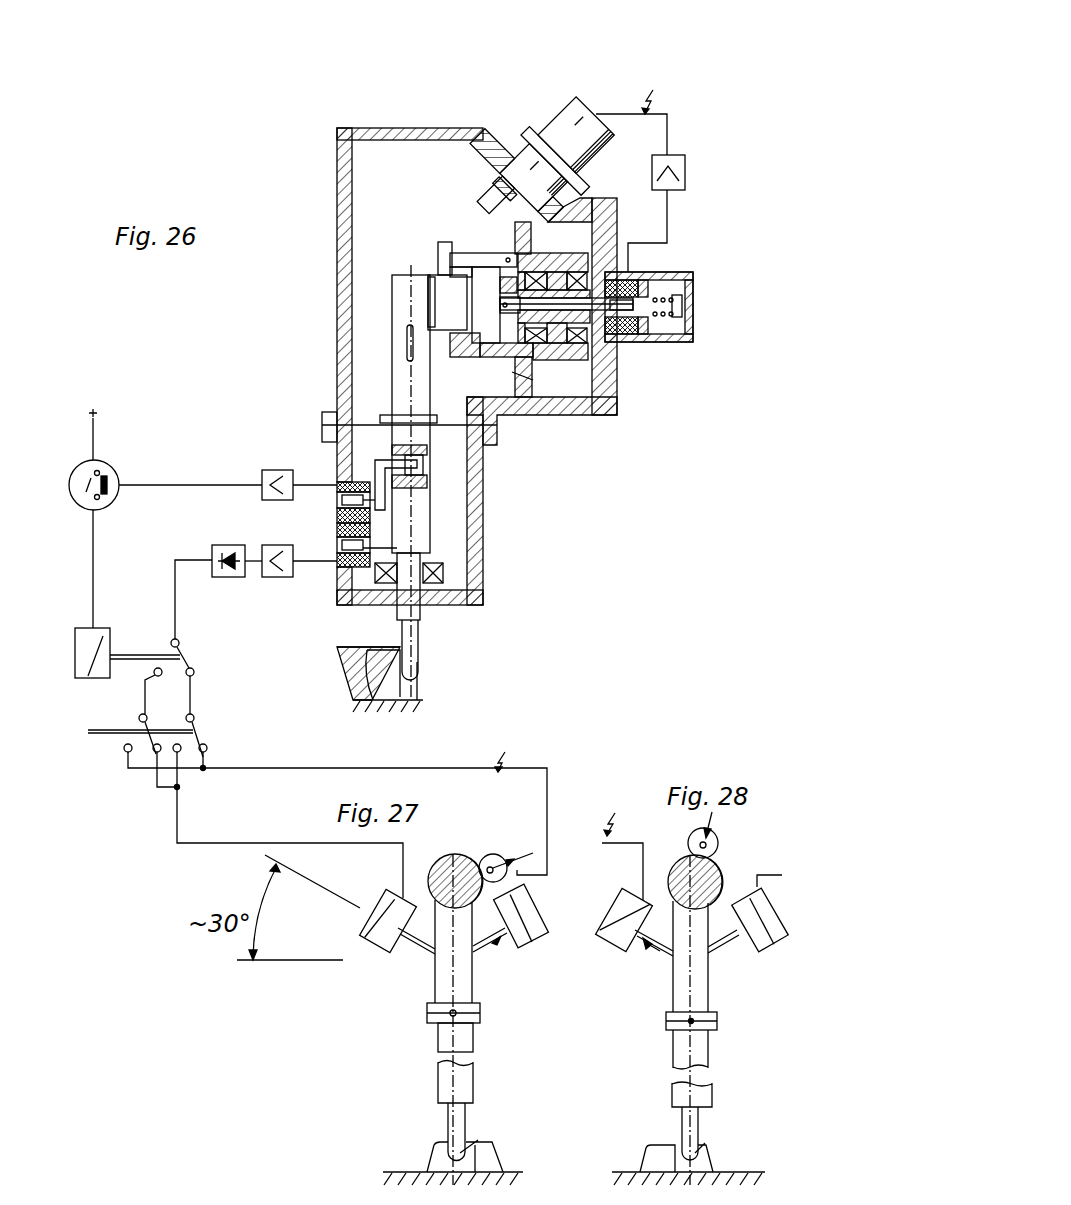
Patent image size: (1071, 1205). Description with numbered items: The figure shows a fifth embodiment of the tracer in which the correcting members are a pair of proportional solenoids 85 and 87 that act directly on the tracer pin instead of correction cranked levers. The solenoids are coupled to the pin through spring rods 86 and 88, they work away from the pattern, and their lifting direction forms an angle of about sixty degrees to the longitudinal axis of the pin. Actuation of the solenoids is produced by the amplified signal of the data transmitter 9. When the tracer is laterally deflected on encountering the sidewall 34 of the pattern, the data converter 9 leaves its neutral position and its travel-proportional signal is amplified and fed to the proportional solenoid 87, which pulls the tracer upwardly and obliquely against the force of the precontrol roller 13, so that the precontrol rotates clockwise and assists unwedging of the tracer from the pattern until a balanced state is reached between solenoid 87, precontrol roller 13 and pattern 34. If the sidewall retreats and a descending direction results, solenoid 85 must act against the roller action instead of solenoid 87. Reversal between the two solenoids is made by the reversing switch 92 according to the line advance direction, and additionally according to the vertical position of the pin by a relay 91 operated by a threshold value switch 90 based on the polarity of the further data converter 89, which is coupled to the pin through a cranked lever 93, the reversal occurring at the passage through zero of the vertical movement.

In FIG. 26, the precontrol roller 13 is at (472, 274).
In FIG. 27, the precontrol roller 13 is at (495, 855).
In FIG. 28, the precontrol roller 13 is at (719, 843).
In FIG. 26, the spring rod 86 is at (406, 343).
In FIG. 27, the spring rod 86 is at (418, 944).
In FIG. 26, the cranked lever 93 is at (377, 467).
In FIG. 26, the data converter 89 is at (337, 512).
In FIG. 26, the data transmitter 9 is at (337, 540).
In FIG. 26, the sidewall 34 is at (367, 665).
In FIG. 27, the sidewall 34 is at (440, 1165).
In FIG. 26, the threshold value switch 90 is at (111, 464).
In FIG. 26, the relay 91 is at (104, 640).
In FIG. 26, the reversing switch 92 is at (108, 730).
In FIG. 27, the proportional solenoid 85 is at (372, 920).
In FIG. 27, the proportional solenoid 87 is at (536, 934).
In FIG. 27, the spring rod 88 is at (474, 948).